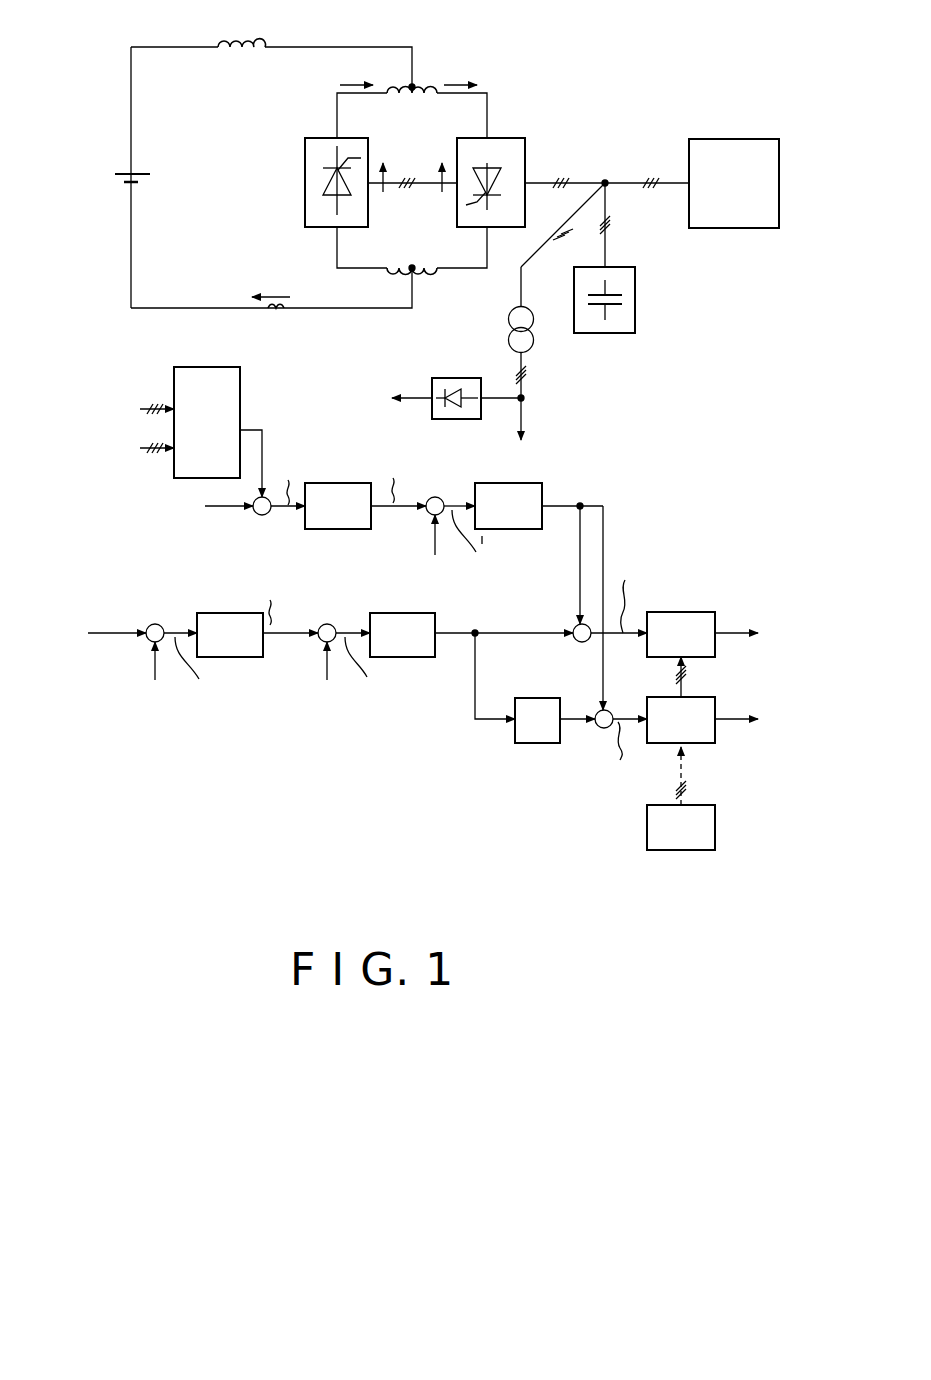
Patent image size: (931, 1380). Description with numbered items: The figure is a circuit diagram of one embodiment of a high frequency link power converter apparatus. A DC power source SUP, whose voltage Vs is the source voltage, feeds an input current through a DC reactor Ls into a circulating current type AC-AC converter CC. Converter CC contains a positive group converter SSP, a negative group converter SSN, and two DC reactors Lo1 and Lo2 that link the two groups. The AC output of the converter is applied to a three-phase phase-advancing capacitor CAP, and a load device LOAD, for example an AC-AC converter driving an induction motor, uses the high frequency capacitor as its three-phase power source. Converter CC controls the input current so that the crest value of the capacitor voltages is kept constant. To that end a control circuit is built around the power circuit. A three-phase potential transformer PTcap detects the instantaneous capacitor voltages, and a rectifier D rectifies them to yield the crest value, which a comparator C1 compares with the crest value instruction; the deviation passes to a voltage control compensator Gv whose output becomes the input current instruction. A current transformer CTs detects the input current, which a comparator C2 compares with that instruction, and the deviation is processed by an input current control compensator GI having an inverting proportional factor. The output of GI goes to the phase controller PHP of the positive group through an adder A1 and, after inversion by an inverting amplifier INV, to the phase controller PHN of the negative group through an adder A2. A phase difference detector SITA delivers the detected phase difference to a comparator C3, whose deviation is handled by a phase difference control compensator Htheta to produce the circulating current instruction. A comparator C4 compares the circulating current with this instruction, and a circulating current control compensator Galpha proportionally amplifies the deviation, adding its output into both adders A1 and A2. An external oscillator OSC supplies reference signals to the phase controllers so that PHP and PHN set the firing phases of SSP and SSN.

The circulating current type AC-AC converter CC is at (466, 23).
The DC reactor Ls is at (242, 31).
The DC reactor Lo1 is at (412, 106).
The DC reactor Lo2 is at (412, 254).
The DC power source SUP is at (119, 166).
The DC source voltage Vs is at (145, 179).
The positive group converter SSP is at (306, 139).
The negative group converter SSN is at (500, 139).
The load device LOAD is at (652, 183).
The phase-advancing capacitor CAP is at (635, 312).
The potential transformer PTcap is at (532, 344).
The rectifier D is at (451, 371).
The current transformer CTs is at (282, 308).
The phase difference detector SITA is at (189, 367).
The comparator C3 is at (262, 515).
The phase difference control compensator Htheta is at (365, 494).
The comparator C4 is at (449, 496).
The circulating current control compensator Galpha is at (539, 596).
The comparator C1 is at (157, 623).
The voltage control compensator Gv is at (257, 618).
The comparator C2 is at (324, 623).
The input current control compensator GI is at (471, 635).
The adder A1 is at (575, 641).
The phase controller PHP is at (702, 651).
The inverting amplifier INV is at (527, 746).
The adder A2 is at (598, 728).
The phase controller PHN is at (702, 719).
The external oscillator OSC is at (699, 798).